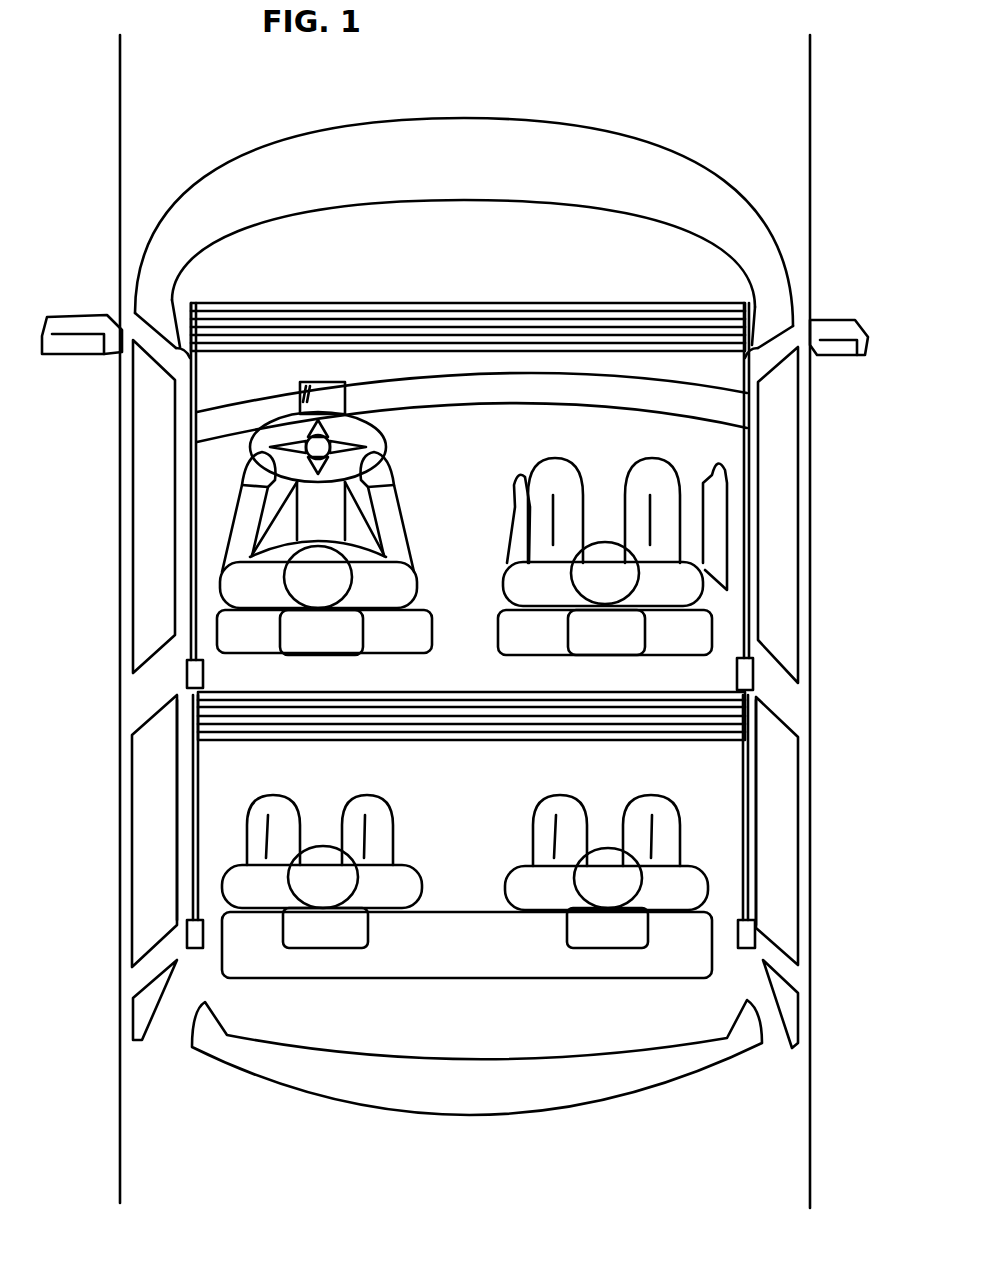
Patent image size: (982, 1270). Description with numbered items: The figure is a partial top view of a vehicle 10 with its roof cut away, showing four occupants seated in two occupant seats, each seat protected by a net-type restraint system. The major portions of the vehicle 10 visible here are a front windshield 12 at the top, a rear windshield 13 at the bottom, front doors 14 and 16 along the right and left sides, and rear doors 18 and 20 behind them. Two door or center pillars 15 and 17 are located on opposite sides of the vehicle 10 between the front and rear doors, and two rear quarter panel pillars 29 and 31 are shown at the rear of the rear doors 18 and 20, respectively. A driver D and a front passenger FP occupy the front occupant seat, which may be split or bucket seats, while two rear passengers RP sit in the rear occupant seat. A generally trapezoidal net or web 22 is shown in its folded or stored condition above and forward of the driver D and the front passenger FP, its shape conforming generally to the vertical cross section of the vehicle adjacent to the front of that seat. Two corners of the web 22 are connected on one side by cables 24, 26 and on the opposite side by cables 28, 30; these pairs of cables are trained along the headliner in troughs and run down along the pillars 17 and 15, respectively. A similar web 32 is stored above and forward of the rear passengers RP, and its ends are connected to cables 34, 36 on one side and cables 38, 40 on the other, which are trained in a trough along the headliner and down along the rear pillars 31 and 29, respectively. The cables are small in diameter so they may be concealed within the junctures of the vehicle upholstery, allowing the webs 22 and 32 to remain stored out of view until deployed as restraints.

The vehicle 10 is at (812, 240).
The front windshield 12 is at (558, 143).
The rear windshield 13 is at (483, 1100).
The front door 14 is at (768, 542).
The door or center pillar 15 is at (755, 672).
The front door 16 is at (152, 517).
The door or center pillar 17 is at (185, 675).
The rear door 18 is at (772, 828).
The rear door 20 is at (152, 832).
The web 22 is at (538, 300).
The cable 24 is at (197, 372).
The cable 26 is at (172, 290).
The cable 28 is at (753, 362).
The rear quarter panel pillar 29 is at (762, 933).
The cable 30 is at (744, 373).
The rear quarter panel pillar 31 is at (183, 937).
The web 32 is at (480, 742).
The cable 34 is at (200, 808).
The cable 36 is at (182, 782).
The cable 38 is at (767, 782).
The cable 40 is at (743, 802).
The driver D is at (396, 585).
The front passenger FP is at (527, 580).
The rear passengers RP is at (407, 878).